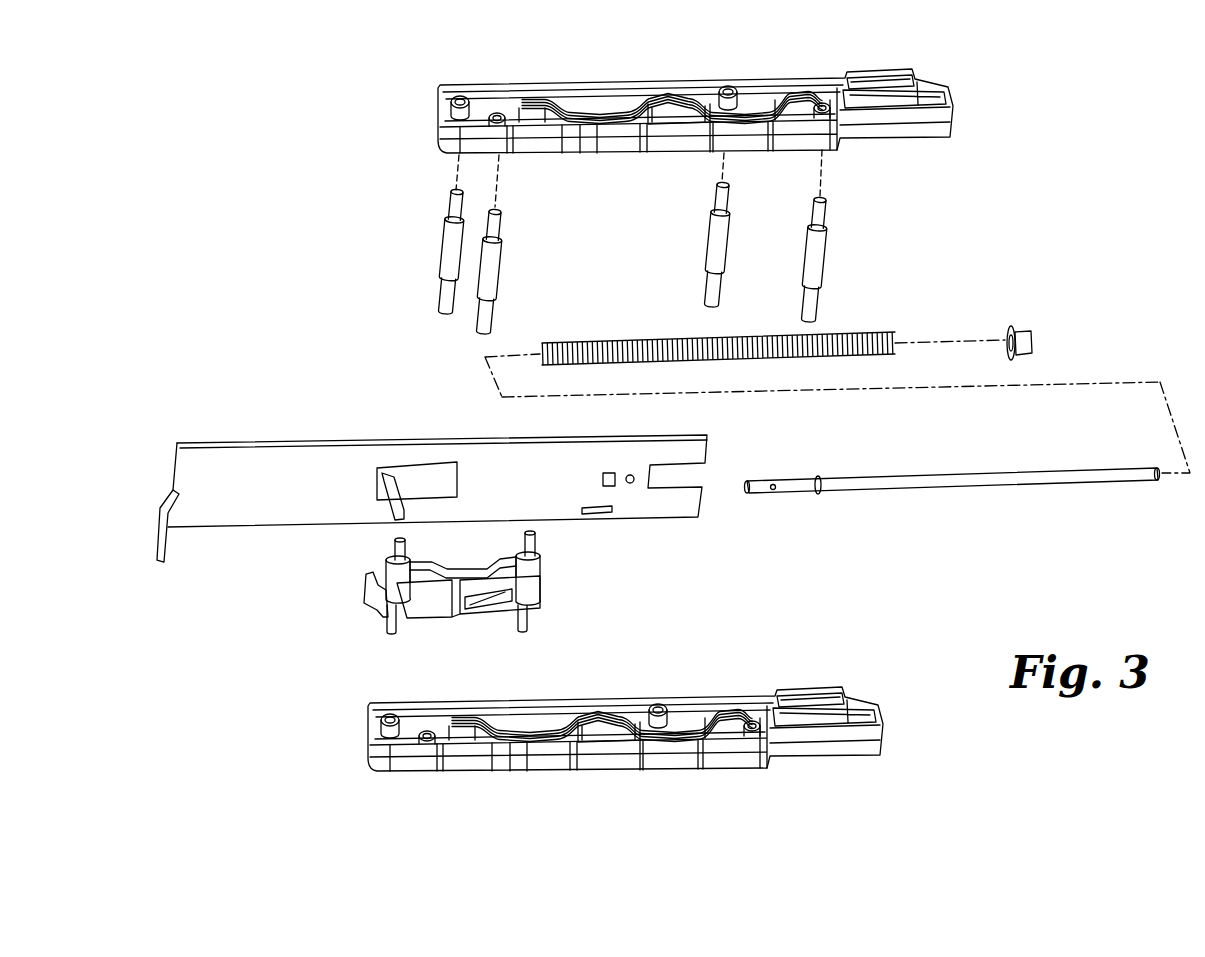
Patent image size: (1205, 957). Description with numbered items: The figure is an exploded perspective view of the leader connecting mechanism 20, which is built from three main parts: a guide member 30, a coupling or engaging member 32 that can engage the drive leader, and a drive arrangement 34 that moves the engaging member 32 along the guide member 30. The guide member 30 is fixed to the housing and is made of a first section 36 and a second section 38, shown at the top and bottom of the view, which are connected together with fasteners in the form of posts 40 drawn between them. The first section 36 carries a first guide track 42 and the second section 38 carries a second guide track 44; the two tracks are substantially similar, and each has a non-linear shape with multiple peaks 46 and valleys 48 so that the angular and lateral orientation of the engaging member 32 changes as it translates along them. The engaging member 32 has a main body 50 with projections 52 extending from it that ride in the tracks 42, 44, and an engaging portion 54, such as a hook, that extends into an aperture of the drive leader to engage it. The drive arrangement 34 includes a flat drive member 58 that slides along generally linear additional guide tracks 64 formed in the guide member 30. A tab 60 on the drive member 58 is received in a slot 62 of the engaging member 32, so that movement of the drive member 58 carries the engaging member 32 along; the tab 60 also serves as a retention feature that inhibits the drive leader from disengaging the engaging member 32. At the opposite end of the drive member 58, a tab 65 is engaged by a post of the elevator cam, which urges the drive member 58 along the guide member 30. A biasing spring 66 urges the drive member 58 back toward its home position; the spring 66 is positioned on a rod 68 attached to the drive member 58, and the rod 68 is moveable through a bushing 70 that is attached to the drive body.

The leader connecting mechanism 20 is at (980, 52).
The guide member 30 is at (748, 98).
The engaging member 32 is at (433, 613).
The drive arrangement 34 is at (390, 494).
The first section 36 is at (968, 108).
The second section 38 is at (663, 713).
The posts 40 is at (440, 252).
The first guide track 42 is at (790, 92).
The second guide track 44 is at (727, 720).
The peaks 46 is at (637, 422).
The valleys 48 is at (617, 115).
The main body 50 is at (462, 605).
The projections 52 is at (540, 540).
The engaging portion 54 is at (470, 612).
The drive member 58 is at (170, 450).
The tab 60 is at (383, 520).
The slot 62 is at (372, 620).
The guide tracks 64 is at (440, 130).
The tab 65 is at (157, 535).
The spring 66 is at (878, 332).
The rod 68 is at (1040, 480).
The bushing 70 is at (1022, 332).